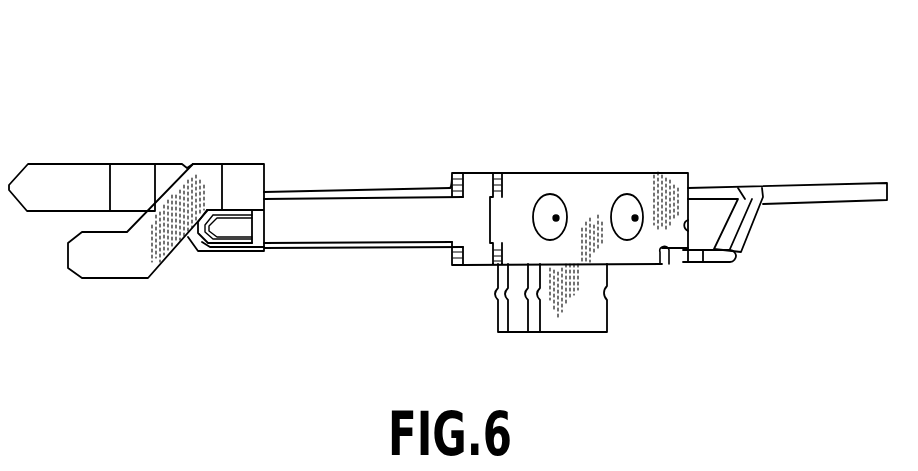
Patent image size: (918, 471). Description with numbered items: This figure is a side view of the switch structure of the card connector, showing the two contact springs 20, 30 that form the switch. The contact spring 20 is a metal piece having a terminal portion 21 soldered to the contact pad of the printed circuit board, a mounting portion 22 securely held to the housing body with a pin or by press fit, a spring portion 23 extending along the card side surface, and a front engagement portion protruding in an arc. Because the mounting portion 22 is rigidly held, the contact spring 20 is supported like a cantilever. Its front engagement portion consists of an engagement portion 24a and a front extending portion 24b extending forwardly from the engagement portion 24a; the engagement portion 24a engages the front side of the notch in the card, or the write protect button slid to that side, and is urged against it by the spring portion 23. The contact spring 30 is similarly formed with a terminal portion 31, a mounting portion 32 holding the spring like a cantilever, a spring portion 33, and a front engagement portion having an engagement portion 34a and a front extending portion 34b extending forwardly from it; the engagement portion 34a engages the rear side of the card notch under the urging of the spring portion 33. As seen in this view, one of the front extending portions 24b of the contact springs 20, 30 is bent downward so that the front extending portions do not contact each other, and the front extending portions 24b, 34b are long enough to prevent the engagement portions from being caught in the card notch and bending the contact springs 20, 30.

The contact spring 20 is at (309, 266).
The terminal portion 21 is at (820, 195).
The mounting portion 22 is at (623, 255).
The spring portion 23 is at (375, 237).
The engagement portion 24a is at (237, 163).
The front extending portion 24b is at (157, 257).
The contact spring 30 is at (190, 126).
The terminal portion 31 is at (703, 192).
The mounting portion 32 is at (477, 178).
The spring portion 33 is at (370, 188).
The engagement portion 34a is at (122, 163).
The front extending portion 34b is at (57, 163).